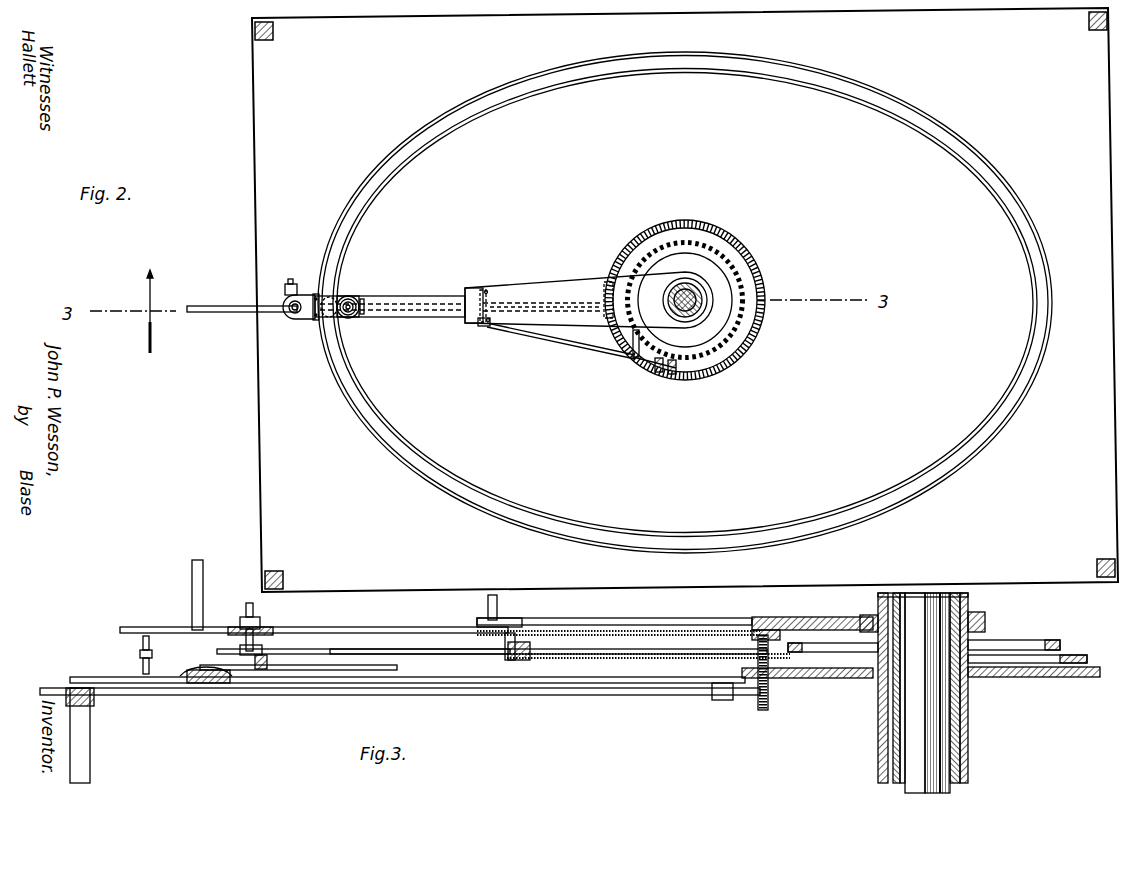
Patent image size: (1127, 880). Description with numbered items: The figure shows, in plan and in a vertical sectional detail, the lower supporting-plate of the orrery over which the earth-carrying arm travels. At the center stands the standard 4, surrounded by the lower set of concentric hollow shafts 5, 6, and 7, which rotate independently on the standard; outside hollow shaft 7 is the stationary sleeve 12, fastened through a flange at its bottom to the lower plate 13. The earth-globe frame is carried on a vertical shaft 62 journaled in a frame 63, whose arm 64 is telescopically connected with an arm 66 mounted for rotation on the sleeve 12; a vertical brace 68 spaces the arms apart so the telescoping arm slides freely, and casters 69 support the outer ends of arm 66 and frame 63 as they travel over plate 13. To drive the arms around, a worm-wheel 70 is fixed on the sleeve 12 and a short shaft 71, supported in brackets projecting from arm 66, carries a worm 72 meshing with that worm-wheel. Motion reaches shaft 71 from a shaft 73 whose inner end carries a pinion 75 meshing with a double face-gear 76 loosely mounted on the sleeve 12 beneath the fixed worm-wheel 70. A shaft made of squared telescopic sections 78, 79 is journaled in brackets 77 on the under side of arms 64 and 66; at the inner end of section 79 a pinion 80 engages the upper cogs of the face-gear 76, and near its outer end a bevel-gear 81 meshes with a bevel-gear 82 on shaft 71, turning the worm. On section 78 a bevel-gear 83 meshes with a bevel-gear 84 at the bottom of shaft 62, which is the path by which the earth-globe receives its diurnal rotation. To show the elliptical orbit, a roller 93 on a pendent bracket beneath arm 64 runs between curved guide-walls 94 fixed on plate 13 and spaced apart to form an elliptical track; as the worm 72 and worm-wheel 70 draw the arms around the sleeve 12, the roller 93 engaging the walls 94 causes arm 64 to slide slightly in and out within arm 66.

In FIG. 2, the standard 4 is at (700, 302).
In FIG. 3, the standard 4 is at (915, 724).
In FIG. 3, the hollow shaft 5 is at (950, 778).
In FIG. 3, the hollow shaft 6 is at (955, 781).
In FIG. 3, the hollow shaft 7 is at (962, 750).
In FIG. 2, the stationary sleeve 12 is at (686, 290).
In FIG. 3, the stationary sleeve 12 is at (968, 603).
In FIG. 2, the lower plate 13 is at (278, 73).
In FIG. 3, the lower plate 13 is at (85, 670).
In FIG. 2, the vertical shaft 62 is at (350, 319).
In FIG. 3, the vertical shaft 62 is at (246, 608).
In FIG. 2, the frame 63 is at (314, 320).
In FIG. 3, the frame 63 is at (192, 592).
In FIG. 2, the arm 64 is at (408, 296).
In FIG. 3, the arm 64 is at (348, 627).
In FIG. 2, the arm 66 is at (569, 290).
In FIG. 3, the arm 66 is at (640, 613).
In FIG. 3, the vertical brace 68 is at (488, 604).
In FIG. 2, the casters 69 is at (289, 280).
In FIG. 3, the casters 69 is at (142, 668).
In FIG. 2, the worm-wheel 70 is at (722, 330).
In FIG. 3, the worm-wheel 70 is at (816, 643).
In FIG. 2, the short shaft 71 is at (566, 338).
In FIG. 2, the worm 72 is at (666, 372).
In FIG. 2, the shaft 73 is at (224, 306).
In FIG. 3, the shaft 73 is at (130, 696).
In FIG. 3, the pinion 75 is at (764, 712).
In FIG. 2, the double face-gear 76 is at (758, 268).
In FIG. 3, the double face-gear 76 is at (820, 678).
In FIG. 3, the brackets 77 is at (509, 660).
In FIG. 2, the shaft-section 78 is at (450, 302).
In FIG. 3, the shaft-section 78 is at (400, 649).
In FIG. 2, the shaft-section 79 is at (530, 306).
In FIG. 3, the shaft-section 79 is at (615, 660).
In FIG. 3, the pinion 80 is at (770, 622).
In FIG. 2, the bevel-gear 81 is at (488, 291).
In FIG. 3, the bevel-gear 81 is at (520, 660).
In FIG. 2, the bevel-gear 82 is at (484, 326).
In FIG. 2, the bevel-gear 83 is at (372, 318).
In FIG. 3, the bevel-gear 83 is at (262, 668).
In FIG. 2, the bevel-gear 84 is at (351, 296).
In FIG. 3, the bevel-gear 84 is at (262, 640).
In FIG. 2, the roller 93 is at (326, 335).
In FIG. 3, the roller 93 is at (198, 670).
In FIG. 2, the curved guide-walls 94 is at (420, 135).
In FIG. 3, the curved guide-walls 94 is at (208, 676).